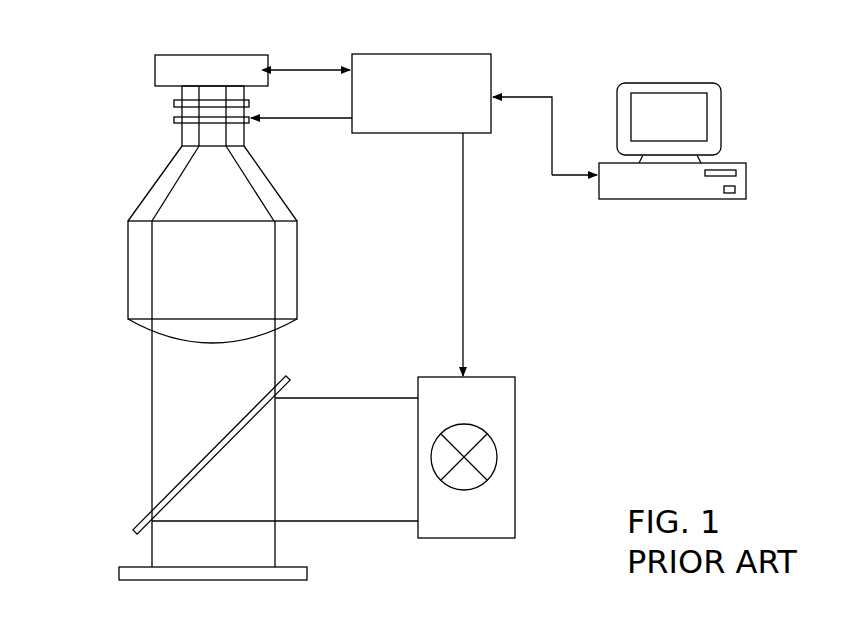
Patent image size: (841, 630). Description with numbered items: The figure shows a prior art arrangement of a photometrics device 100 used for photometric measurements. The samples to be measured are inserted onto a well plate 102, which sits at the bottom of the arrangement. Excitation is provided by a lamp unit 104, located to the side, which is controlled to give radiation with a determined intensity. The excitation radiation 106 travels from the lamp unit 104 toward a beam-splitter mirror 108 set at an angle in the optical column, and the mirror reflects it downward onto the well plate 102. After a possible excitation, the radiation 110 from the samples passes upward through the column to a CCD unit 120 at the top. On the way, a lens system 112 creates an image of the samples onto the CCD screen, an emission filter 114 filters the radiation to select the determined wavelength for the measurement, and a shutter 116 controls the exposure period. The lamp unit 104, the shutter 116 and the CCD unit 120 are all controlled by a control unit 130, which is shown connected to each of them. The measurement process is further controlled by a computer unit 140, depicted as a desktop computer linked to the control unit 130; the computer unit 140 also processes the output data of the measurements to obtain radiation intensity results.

The photometrics device 100 is at (688, 337).
The well plate 102 is at (108, 578).
The lamp unit 104 is at (520, 427).
The excitation radiation 106 is at (330, 388).
The beam-splitter mirror 108 is at (295, 373).
The radiation from the samples 110 is at (152, 393).
The lens system 112 is at (302, 255).
The emission filter 114 is at (167, 103).
The shutter 116 is at (167, 125).
The CCD unit 120 is at (203, 49).
The control unit 130 is at (452, 48).
The computer unit 140 is at (657, 212).